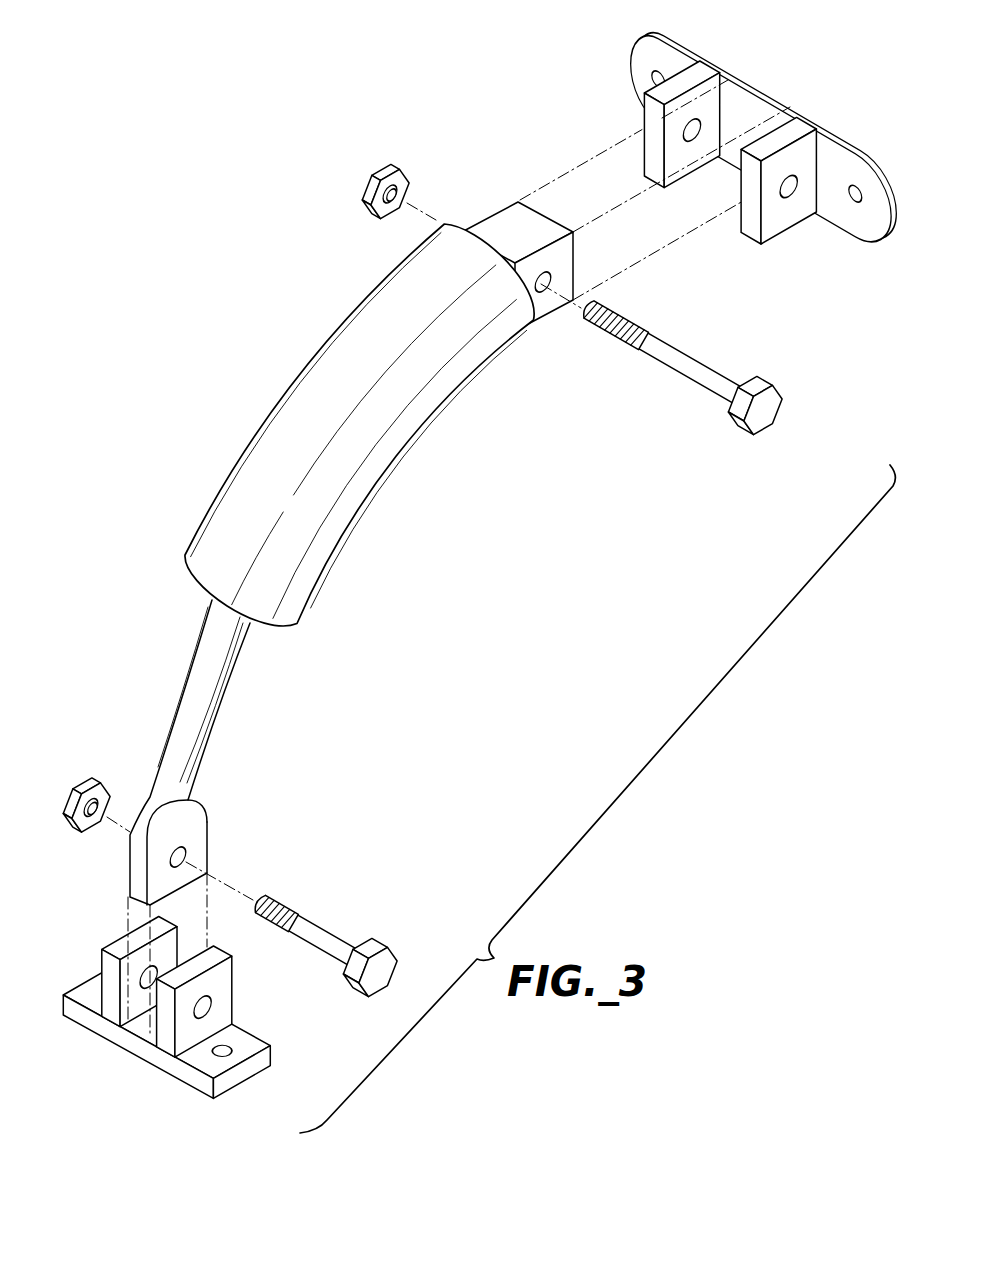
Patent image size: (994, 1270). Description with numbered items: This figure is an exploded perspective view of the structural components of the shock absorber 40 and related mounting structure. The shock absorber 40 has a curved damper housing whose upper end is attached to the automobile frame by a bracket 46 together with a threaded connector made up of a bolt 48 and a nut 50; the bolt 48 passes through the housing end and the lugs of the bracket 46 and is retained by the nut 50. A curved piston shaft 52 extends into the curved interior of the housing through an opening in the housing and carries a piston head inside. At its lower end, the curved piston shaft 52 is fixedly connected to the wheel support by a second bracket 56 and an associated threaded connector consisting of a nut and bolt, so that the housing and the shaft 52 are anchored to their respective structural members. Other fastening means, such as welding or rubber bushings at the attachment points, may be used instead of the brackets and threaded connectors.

The shock absorber 40 is at (367, 529).
The bracket 46 is at (865, 222).
The bolt 48 is at (698, 392).
The nut 50 is at (389, 168).
The curved piston shaft 52 is at (190, 650).
The bracket 56 is at (148, 1052).